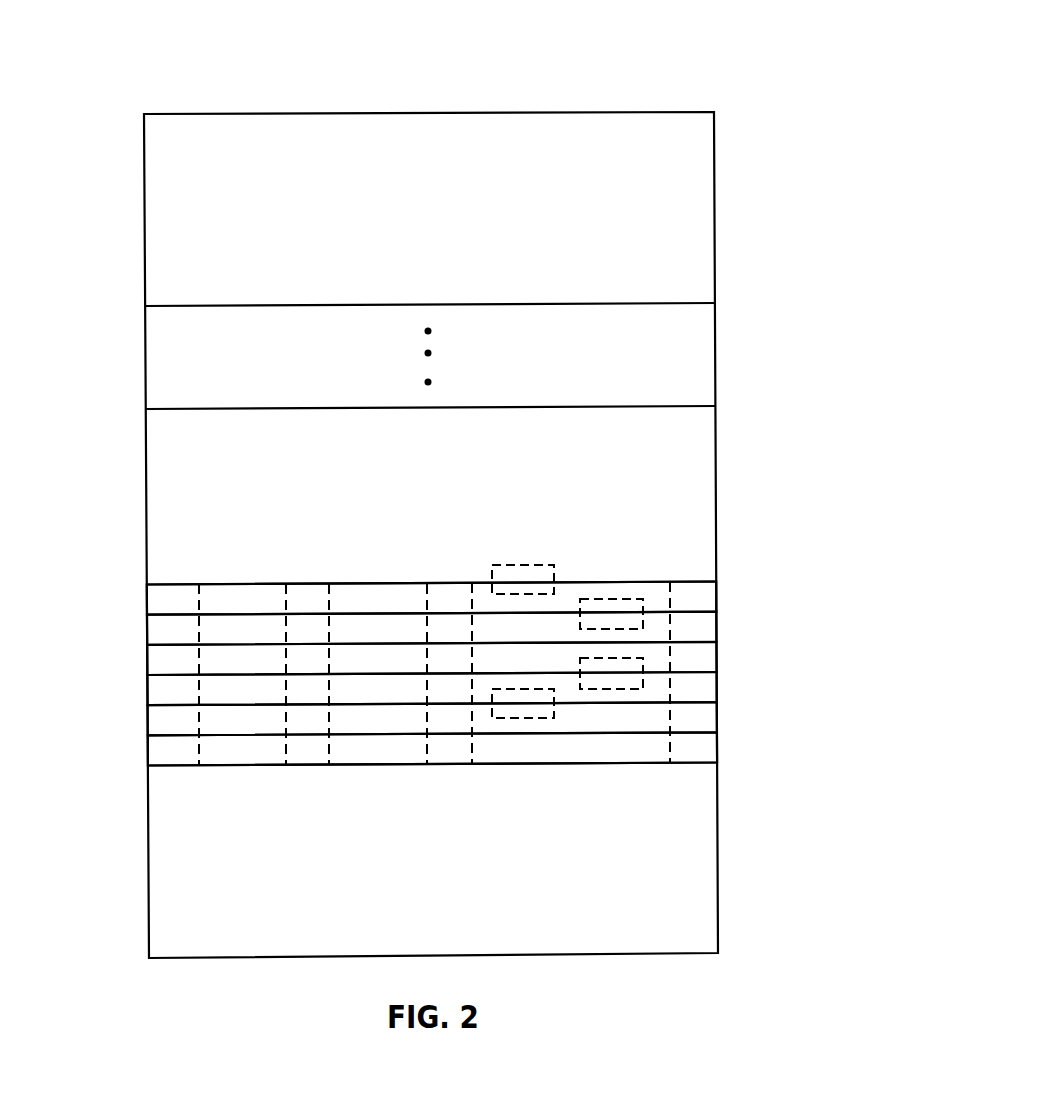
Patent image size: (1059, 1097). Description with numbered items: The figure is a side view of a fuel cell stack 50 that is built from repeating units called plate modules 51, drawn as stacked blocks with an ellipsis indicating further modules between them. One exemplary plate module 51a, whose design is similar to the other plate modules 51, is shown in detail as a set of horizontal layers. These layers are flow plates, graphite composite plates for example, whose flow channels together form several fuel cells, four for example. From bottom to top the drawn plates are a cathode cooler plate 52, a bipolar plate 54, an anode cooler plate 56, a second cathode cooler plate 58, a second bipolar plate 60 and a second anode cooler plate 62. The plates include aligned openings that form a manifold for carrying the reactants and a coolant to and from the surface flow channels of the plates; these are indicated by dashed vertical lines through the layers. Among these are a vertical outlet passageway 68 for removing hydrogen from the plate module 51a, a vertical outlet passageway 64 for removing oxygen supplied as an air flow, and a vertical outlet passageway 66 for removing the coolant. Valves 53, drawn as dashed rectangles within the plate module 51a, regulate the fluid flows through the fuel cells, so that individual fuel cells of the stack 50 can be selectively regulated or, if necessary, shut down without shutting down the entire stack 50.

The fuel cell stack 50 is at (762, 89).
The plate module 51 is at (714, 213).
The exemplary plate module 51a is at (723, 768).
The cathode cooler plate 52 is at (147, 751).
The valve 53 is at (641, 657).
The bipolar plate 54 is at (146, 721).
The anode cooler plate 56 is at (146, 691).
The cathode cooler plate 58 is at (146, 660).
The bipolar plate 60 is at (146, 631).
The anode cooler plate 62 is at (146, 601).
The vertical outlet passageway for oxygen 64 is at (250, 704).
The vertical outlet passageway for coolant 66 is at (375, 718).
The vertical outlet passageway for hydrogen 68 is at (615, 720).